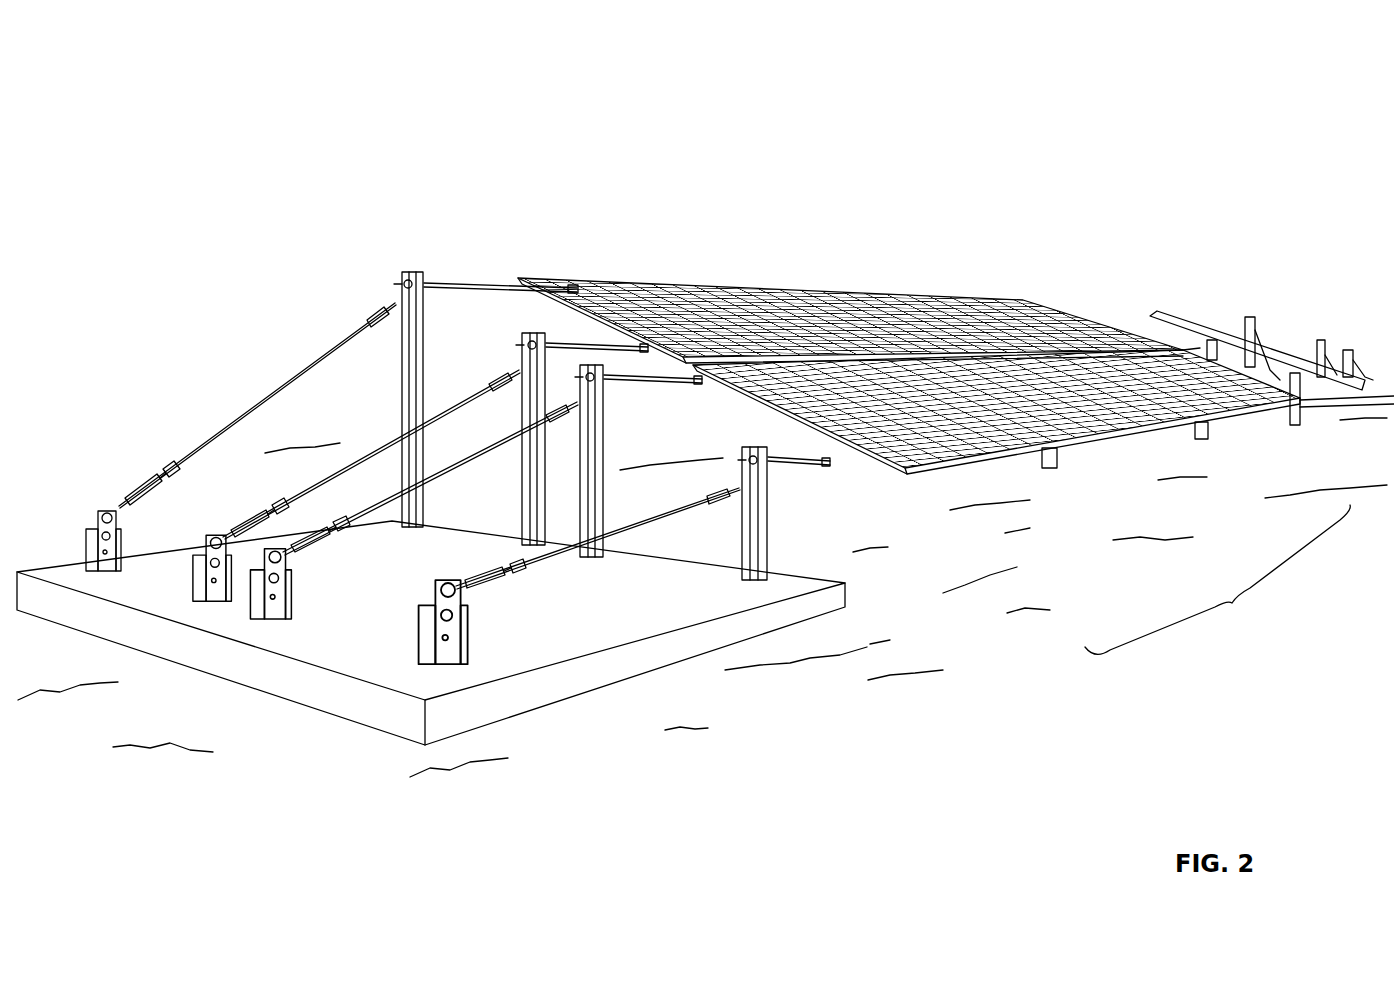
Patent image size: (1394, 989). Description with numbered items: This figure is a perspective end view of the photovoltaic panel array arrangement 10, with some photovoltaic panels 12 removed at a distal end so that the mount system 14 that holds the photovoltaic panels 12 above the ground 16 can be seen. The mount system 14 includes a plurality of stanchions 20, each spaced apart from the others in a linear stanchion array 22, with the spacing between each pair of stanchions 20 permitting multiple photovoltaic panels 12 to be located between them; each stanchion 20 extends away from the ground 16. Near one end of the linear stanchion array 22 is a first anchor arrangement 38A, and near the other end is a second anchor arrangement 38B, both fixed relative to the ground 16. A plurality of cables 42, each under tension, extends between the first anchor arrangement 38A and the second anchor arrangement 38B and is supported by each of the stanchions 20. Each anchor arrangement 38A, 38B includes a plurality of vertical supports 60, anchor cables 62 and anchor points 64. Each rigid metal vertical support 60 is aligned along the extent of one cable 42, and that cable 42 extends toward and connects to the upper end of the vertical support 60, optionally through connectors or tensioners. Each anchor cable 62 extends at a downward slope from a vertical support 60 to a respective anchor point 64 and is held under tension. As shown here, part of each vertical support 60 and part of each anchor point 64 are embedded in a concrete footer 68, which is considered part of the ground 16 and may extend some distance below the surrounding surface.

The photovoltaic panel array arrangement 10 is at (760, 189).
The photovoltaic panels 12 is at (803, 297).
The mount system 14 is at (339, 304).
The ground 16 is at (163, 733).
The stanchions 20 is at (1061, 473).
The linear stanchion array 22 is at (1217, 579).
The first anchor arrangement 38A is at (169, 401).
The second anchor arrangement 38B is at (1219, 299).
The cables 42 is at (456, 290).
The vertical supports 60 is at (407, 360).
The anchor cables 62 is at (243, 417).
The anchor points 64 is at (88, 547).
The concrete footer 68 is at (580, 682).